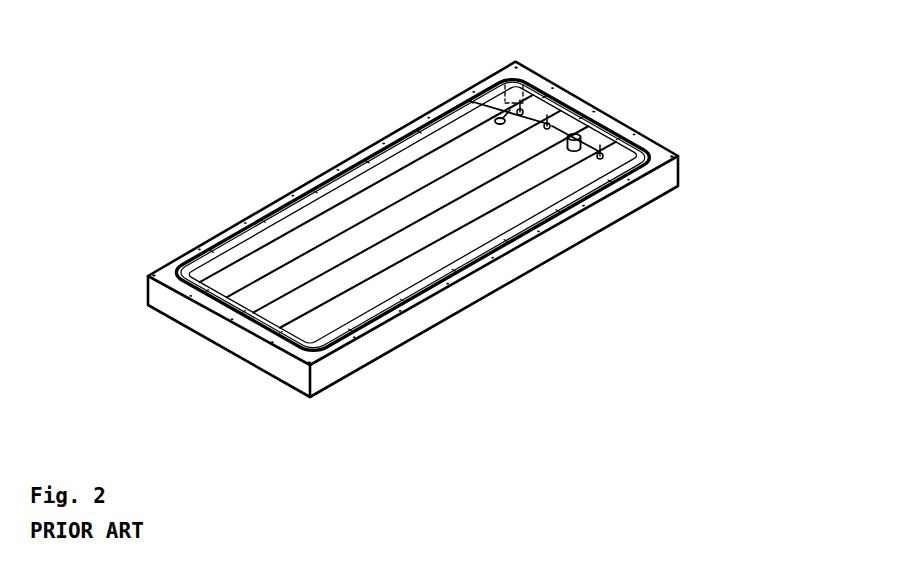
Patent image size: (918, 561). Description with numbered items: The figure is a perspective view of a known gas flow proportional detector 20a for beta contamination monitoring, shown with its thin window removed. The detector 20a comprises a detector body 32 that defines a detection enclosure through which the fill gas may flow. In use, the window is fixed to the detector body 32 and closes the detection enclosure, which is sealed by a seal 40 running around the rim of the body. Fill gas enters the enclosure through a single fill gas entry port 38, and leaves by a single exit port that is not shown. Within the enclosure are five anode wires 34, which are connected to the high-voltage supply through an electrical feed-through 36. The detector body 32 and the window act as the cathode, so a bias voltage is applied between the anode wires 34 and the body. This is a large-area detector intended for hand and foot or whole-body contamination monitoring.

The gas flow proportional detector 20a is at (216, 109).
The detector body 32 is at (413, 229).
The anode wires 34 is at (396, 201).
The electrical feed-through 36 is at (578, 134).
The fill gas entry port 38 is at (470, 101).
The seal 40 is at (272, 212).